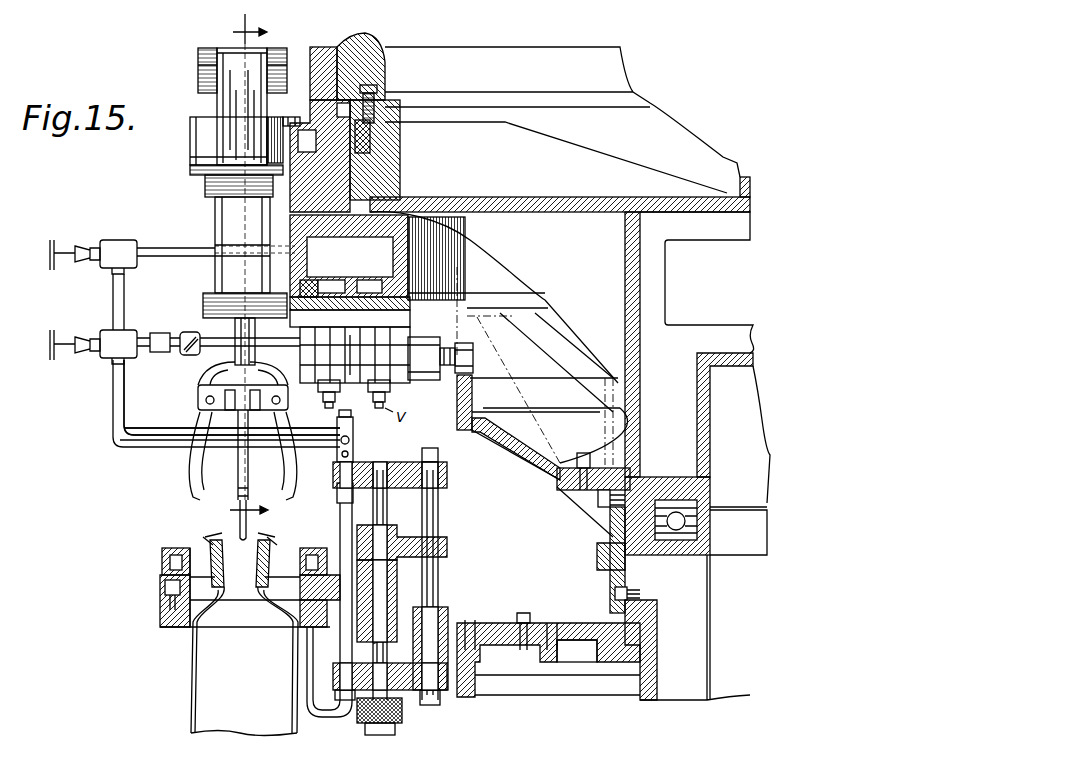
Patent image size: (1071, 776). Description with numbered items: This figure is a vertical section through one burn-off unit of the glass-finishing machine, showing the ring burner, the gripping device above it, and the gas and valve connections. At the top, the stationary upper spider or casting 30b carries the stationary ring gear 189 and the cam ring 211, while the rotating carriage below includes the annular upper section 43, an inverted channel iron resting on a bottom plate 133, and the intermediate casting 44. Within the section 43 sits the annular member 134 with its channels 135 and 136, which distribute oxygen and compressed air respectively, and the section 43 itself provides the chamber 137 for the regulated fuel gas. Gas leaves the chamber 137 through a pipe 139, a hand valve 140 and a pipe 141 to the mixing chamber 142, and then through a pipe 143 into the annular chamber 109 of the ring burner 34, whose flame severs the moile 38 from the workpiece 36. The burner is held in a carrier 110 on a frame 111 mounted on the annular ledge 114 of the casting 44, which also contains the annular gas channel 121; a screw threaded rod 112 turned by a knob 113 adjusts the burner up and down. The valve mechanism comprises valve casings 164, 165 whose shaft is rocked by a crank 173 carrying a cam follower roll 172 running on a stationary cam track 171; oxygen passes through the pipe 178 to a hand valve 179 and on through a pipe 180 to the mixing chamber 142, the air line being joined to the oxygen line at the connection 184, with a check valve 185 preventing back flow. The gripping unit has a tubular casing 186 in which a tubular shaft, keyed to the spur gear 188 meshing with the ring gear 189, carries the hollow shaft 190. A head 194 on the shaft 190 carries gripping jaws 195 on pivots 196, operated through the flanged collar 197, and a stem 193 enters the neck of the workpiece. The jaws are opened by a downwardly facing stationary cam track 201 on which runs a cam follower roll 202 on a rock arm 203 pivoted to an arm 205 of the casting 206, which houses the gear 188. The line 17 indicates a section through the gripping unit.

The section line 17- 17 is at (231, 267).
The upper spider or casting 30b is at (545, 205).
The ring burner 34 is at (144, 596).
The workpiece 36 is at (194, 651).
The moile 38 is at (218, 556).
The annular upper section 43 is at (477, 252).
The intermediate section or casting 44 is at (632, 642).
The annular chamber 109 is at (163, 562).
The carrier 110 is at (400, 583).
The frame 111 is at (417, 620).
The screw threaded rod 112 is at (400, 567).
The knob 113 is at (395, 723).
The annular ledge 114 is at (503, 662).
The annular channel 121 is at (568, 642).
The bottom plate 133 is at (522, 300).
The annular casting or member 134 is at (373, 284).
The annular channel 135 is at (345, 284).
The annular channel 136 is at (318, 284).
The chamber 137 is at (333, 236).
The pipe 139 is at (167, 256).
The hand valve 140 is at (113, 250).
The pipe 141 is at (122, 305).
The mixing chamber 142 is at (354, 442).
The pipe 143 is at (326, 718).
The valve casing 164 is at (318, 386).
The valve casing 165 is at (392, 390).
The stationary cam track 171 is at (470, 392).
The cam follower roll 172 is at (473, 352).
The crank 173 is at (448, 348).
The pipe 178 is at (267, 347).
The hand valve 179 is at (108, 357).
The pipe 180 is at (150, 434).
The connection 184 is at (157, 331).
The check valve 185 is at (200, 331).
The tubular casing 186 is at (222, 222).
The spur gear 188 is at (292, 112).
The stationary ring gear 189 is at (310, 163).
The hollow shaft 190 is at (256, 351).
The stem 193 is at (253, 540).
The head 194 is at (228, 372).
The gripping jaws 195 is at (236, 470).
The pivots 196 is at (207, 400).
The flanged collar 197 is at (226, 420).
The stationary cam track 201 is at (358, 46).
The cam follower roll 202 is at (322, 60).
The rock arm 203 is at (200, 55).
The arm 205 is at (240, 82).
The casting 206 is at (196, 137).
The cam ring 211 is at (392, 140).